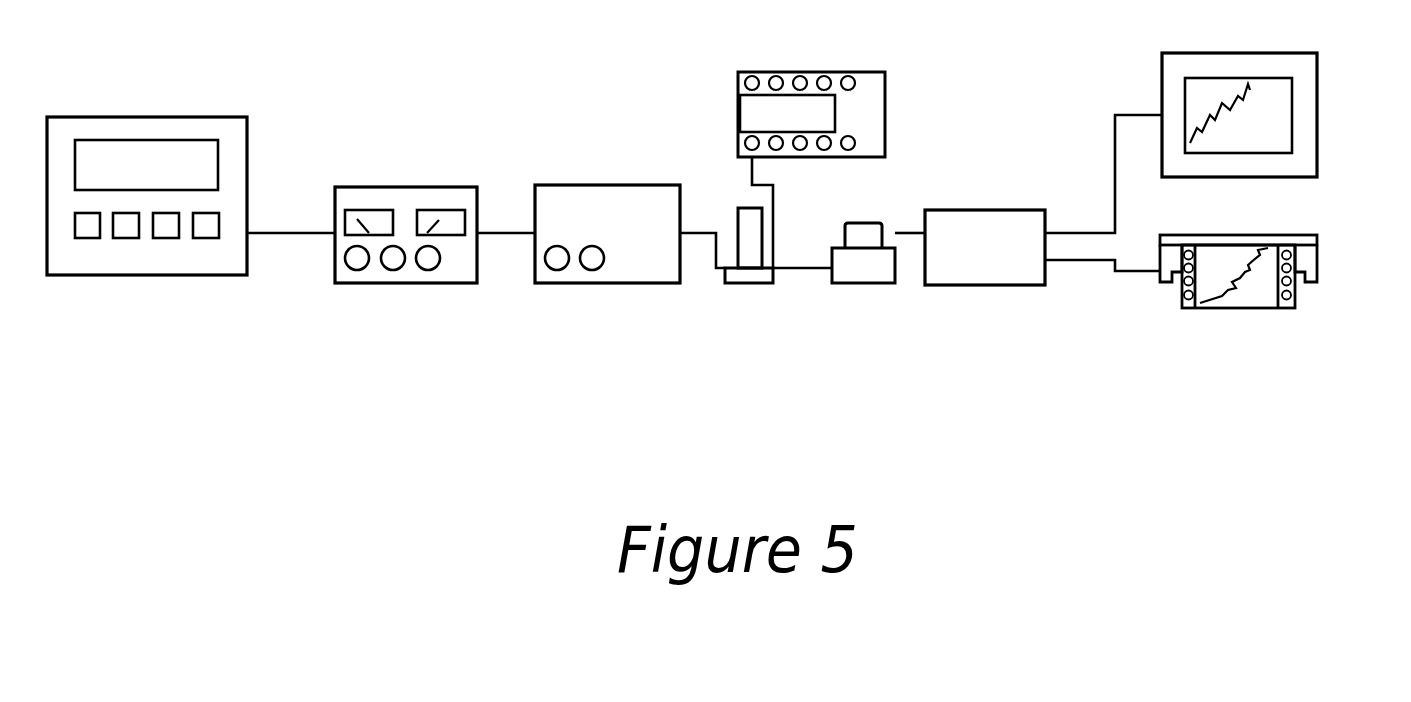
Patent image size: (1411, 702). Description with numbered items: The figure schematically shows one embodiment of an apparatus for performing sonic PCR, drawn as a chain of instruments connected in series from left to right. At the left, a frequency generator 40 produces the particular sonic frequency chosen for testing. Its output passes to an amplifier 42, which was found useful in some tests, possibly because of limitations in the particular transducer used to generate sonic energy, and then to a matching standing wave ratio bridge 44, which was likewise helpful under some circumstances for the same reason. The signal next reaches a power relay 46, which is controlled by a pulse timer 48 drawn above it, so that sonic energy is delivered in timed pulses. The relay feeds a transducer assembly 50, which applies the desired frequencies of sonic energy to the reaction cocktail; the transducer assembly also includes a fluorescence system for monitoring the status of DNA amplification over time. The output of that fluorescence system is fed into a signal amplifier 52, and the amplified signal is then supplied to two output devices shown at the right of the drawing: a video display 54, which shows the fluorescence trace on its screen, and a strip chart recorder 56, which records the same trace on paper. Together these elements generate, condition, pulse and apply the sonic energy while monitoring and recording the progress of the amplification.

The frequency generator 40 is at (145, 277).
The amplifier 42 is at (405, 283).
The matching standing wave ratio (SWR) bridge 44 is at (605, 283).
The power relay 46 is at (749, 287).
The pulse timer 48 is at (885, 113).
The transducer assembly 50 is at (862, 287).
The signal amplifier 52 is at (982, 285).
The video display 54 is at (1318, 113).
The strip chart recorder 56 is at (1318, 263).